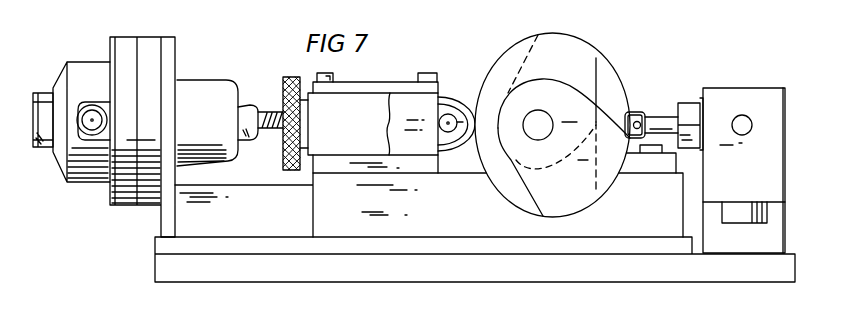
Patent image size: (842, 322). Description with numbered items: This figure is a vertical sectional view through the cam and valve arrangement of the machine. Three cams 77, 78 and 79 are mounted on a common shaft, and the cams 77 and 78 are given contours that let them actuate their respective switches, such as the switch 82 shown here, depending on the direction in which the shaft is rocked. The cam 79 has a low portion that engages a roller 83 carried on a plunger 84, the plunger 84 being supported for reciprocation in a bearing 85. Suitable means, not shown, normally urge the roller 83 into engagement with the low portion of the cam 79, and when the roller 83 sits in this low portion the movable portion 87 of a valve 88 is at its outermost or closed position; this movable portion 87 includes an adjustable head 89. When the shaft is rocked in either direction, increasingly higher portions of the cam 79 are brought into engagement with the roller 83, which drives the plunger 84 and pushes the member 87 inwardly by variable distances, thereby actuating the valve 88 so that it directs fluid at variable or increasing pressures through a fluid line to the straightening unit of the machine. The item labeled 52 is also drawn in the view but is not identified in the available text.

The shaft 52 is at (543, 126).
The cam 77 is at (604, 98).
The cam 78 is at (612, 154).
The cam 79 is at (502, 68).
The switch 82 is at (743, 102).
The roller 83 is at (457, 99).
The plunger 84 is at (338, 103).
The bearing 85 is at (378, 87).
The movable portion of valve 87 is at (247, 105).
The valve 88 is at (186, 87).
The adjustable head 89 is at (289, 62).